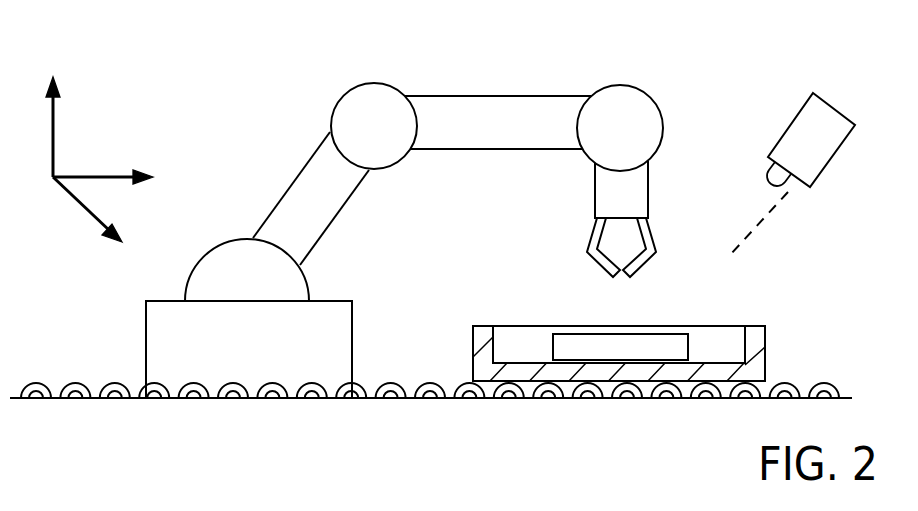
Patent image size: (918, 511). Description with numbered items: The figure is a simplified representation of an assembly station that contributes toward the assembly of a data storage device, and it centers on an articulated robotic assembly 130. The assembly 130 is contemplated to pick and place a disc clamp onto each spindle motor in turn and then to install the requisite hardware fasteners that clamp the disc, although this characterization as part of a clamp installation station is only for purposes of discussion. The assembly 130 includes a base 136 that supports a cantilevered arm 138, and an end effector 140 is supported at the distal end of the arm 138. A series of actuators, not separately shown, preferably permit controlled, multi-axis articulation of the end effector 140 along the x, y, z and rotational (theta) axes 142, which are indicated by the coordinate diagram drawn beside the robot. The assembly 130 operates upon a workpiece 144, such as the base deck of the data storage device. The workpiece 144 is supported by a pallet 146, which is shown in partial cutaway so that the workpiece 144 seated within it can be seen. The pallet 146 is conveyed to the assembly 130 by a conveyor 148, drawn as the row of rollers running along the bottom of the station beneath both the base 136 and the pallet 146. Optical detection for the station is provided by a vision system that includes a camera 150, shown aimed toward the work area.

The robotic assembly 130 is at (457, 53).
The base 136 is at (162, 358).
The cantilevered arm 138 is at (513, 133).
The end effector 140 is at (643, 200).
The axes 142 is at (115, 104).
The workpiece 144 is at (580, 342).
The pallet 146 is at (753, 333).
The conveyor 148 is at (393, 384).
The camera 150 is at (803, 125).